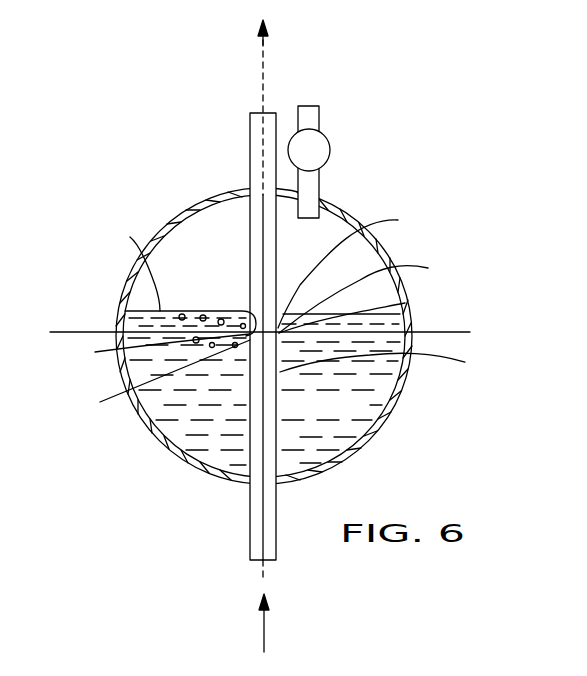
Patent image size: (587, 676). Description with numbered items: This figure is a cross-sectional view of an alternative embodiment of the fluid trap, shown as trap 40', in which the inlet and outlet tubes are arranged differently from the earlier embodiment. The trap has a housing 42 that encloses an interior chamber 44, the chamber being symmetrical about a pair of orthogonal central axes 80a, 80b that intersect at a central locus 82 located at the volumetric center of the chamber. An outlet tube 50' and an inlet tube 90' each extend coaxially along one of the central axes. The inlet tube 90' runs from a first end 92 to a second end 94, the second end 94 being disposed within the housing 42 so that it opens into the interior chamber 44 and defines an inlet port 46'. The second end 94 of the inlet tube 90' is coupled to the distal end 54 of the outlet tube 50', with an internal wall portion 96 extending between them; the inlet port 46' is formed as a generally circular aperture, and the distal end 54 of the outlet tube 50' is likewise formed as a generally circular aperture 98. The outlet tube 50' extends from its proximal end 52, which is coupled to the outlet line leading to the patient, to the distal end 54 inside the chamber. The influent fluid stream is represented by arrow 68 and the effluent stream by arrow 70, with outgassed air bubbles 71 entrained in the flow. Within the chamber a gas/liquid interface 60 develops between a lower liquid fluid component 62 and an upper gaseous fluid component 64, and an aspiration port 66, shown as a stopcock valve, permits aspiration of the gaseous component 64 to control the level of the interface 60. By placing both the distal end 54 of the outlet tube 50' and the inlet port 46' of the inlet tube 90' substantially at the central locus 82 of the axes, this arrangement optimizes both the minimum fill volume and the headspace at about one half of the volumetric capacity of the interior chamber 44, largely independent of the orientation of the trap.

The fluid trap 40' is at (436, 154).
The housing 42 is at (200, 197).
The interior chamber 44 is at (212, 257).
The inlet port 46' is at (156, 381).
The outlet tube 50' is at (214, 335).
The proximal end 52 is at (268, 110).
The distal end 54 is at (369, 292).
The gas/liquid interface 60 is at (130, 237).
The liquid fluid component 62 is at (331, 415).
The gaseous fluid component 64 is at (318, 255).
The aspiration port 66 is at (320, 118).
The influent fluid stream 68 is at (268, 636).
The effluent fluid stream 70 is at (268, 62).
The outgassed air bubbles 71 is at (151, 351).
The central axis 80a is at (95, 330).
The central axis 80b is at (266, 576).
The central locus 82 is at (354, 265).
The inlet tube 90' is at (201, 496).
The first end 92 is at (252, 568).
The second end 94 is at (390, 366).
The internal wall portion 96 is at (257, 320).
The circular aperture 98 is at (405, 303).